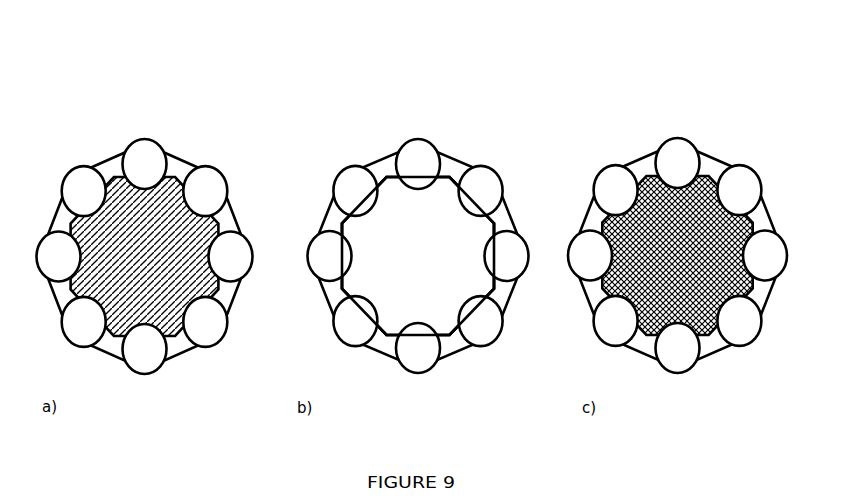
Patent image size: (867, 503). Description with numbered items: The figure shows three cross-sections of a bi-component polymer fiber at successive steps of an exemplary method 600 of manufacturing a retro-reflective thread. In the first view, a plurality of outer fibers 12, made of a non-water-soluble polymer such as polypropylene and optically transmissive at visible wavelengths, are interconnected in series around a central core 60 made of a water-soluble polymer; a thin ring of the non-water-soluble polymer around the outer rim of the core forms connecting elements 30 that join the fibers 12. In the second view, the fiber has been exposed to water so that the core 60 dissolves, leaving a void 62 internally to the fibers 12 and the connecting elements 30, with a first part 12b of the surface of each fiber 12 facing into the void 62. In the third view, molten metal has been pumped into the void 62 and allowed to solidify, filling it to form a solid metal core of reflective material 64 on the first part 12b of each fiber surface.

The method of manufacturing a retro-reflective thread 600 is at (192, 73).
The fiber 12 is at (211, 184).
The first part of the surface of each fiber 12b is at (448, 213).
The connecting elements 30 is at (170, 347).
The core 60 is at (120, 186).
The void 62 is at (397, 197).
The reflective material 64 is at (657, 198).